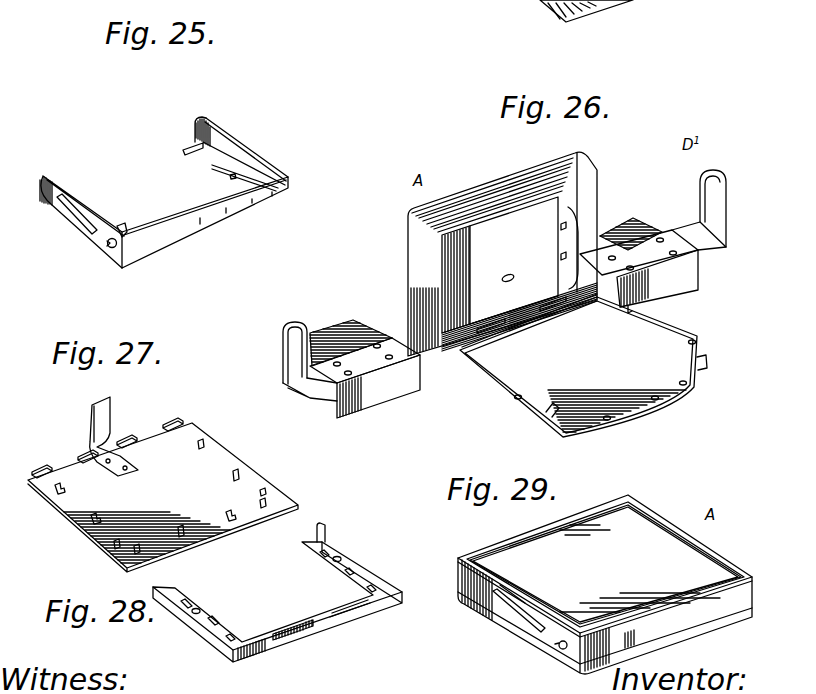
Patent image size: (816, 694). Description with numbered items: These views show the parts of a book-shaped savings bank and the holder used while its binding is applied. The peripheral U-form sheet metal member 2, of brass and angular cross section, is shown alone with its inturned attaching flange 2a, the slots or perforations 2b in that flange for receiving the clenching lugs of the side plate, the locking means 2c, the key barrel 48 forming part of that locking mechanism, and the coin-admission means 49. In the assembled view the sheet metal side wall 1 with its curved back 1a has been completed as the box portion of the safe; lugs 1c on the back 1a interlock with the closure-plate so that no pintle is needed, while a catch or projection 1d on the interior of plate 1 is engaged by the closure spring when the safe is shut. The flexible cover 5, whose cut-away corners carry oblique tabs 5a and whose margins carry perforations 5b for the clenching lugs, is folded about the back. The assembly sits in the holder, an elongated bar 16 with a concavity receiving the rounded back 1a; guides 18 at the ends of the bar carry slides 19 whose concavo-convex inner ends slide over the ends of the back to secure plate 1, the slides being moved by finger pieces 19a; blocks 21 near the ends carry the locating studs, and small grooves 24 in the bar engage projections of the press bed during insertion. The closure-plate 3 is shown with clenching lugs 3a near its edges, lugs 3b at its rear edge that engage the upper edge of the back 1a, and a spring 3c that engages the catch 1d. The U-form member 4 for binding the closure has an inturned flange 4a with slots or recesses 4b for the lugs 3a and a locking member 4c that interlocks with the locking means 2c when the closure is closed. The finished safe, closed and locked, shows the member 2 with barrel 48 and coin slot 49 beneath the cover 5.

In FIG. 26, the side wall 1 is at (514, 275).
In FIG. 26, the curved back 1a is at (521, 316).
In FIG. 26, the lugs 1c is at (490, 323).
In FIG. 26, the catch or projection 1d is at (514, 277).
In FIG. 25, the peripheral U-form sheet metal member 2 is at (216, 226).
In FIG. 26, the peripheral U-form sheet metal member 2 is at (466, 212).
In FIG. 29, the peripheral U-form sheet metal member 2 is at (655, 638).
In FIG. 25, the inturned attaching flange 2a is at (213, 168).
In FIG. 25, the slots or perforations 2b is at (200, 148).
In FIG. 25, the locking means 2c is at (120, 228).
In FIG. 27, the sheet metal member (closure-plate) 3 is at (215, 450).
In FIG. 27, the clenching lugs 3a is at (88, 517).
In FIG. 27, the lugs 3b is at (126, 438).
In FIG. 27, the spring 3c is at (105, 415).
In FIG. 28, the U-form member 4 is at (226, 632).
In FIG. 28, the inturned flange 4a is at (203, 610).
In FIG. 28, the slots or recesses 4b is at (343, 569).
In FIG. 28, the locking member 4c is at (320, 620).
In FIG. 26, the flexible cover 5 is at (638, 404).
In FIG. 29, the flexible cover 5 is at (462, 600).
In FIG. 26, the oblique tabs 5a is at (716, 348).
In FIG. 26, the perforations 5b is at (690, 344).
In FIG. 26, the elongated piece of metal (bar) 16 is at (680, 283).
In FIG. 26, the guides 18 is at (380, 392).
In FIG. 26, the slides 19 is at (316, 398).
In FIG. 26, the finger pieces 19a is at (283, 352).
In FIG. 26, the blocks 21 is at (328, 332).
In FIG. 26, the grooves 24 is at (420, 378).
In FIG. 25, the key barrel 48 is at (107, 246).
In FIG. 29, the key barrel 48 is at (558, 648).
In FIG. 25, the coin-admission means 49 is at (80, 221).
In FIG. 29, the coin-admission means 49 is at (510, 612).